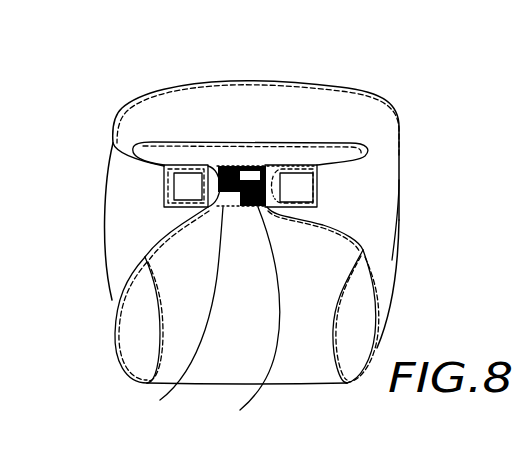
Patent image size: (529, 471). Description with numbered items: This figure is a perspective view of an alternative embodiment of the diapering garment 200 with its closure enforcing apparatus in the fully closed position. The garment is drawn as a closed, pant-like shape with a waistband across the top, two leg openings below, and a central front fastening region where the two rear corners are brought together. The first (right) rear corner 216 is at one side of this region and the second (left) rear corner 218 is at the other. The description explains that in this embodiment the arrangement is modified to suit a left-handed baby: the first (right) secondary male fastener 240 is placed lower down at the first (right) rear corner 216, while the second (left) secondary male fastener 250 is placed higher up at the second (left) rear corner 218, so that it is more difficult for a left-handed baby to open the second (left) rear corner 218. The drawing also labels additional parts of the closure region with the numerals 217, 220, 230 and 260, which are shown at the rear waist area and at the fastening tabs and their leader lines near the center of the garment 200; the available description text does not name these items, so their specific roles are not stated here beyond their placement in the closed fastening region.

The diapering garment 200 is at (390, 87).
The first (right) rear corner 216 is at (163, 200).
The rear waist portion 217 is at (528, 258).
The second (left) rear corner 218 is at (272, 211).
The first fastening tab 220 is at (172, 167).
The second fastening tab 230 is at (305, 187).
The first (right) secondary male fastener 240 is at (160, 400).
The second (left) secondary male fastener 250 is at (255, 172).
The second leg elastic 260 is at (240, 410).